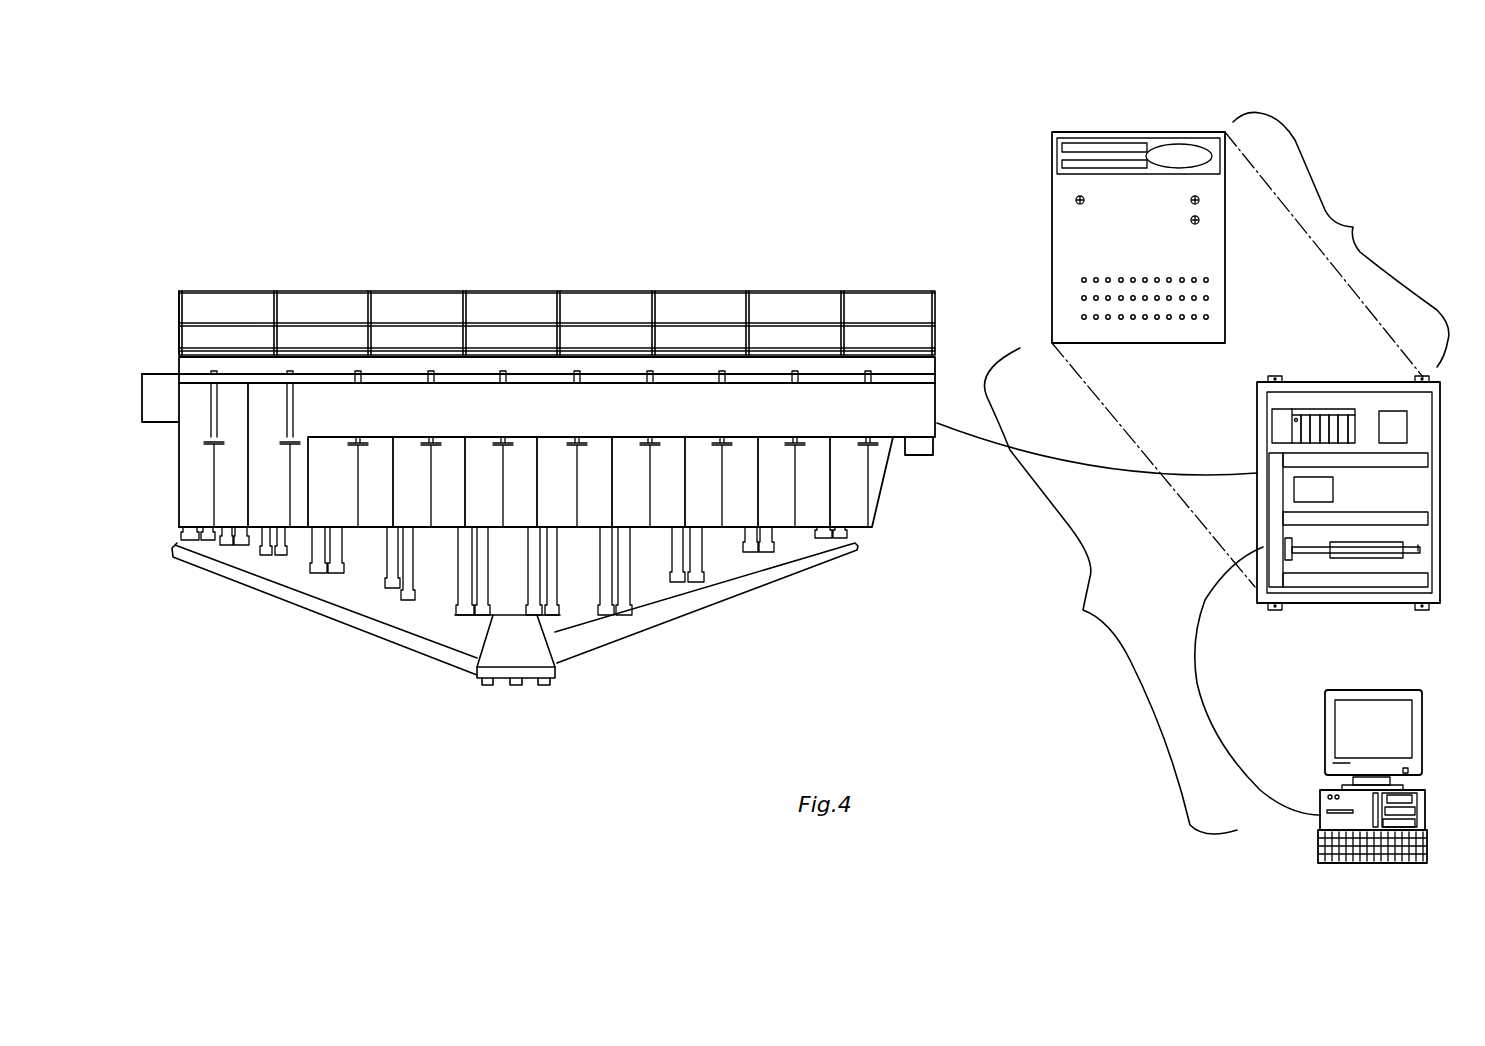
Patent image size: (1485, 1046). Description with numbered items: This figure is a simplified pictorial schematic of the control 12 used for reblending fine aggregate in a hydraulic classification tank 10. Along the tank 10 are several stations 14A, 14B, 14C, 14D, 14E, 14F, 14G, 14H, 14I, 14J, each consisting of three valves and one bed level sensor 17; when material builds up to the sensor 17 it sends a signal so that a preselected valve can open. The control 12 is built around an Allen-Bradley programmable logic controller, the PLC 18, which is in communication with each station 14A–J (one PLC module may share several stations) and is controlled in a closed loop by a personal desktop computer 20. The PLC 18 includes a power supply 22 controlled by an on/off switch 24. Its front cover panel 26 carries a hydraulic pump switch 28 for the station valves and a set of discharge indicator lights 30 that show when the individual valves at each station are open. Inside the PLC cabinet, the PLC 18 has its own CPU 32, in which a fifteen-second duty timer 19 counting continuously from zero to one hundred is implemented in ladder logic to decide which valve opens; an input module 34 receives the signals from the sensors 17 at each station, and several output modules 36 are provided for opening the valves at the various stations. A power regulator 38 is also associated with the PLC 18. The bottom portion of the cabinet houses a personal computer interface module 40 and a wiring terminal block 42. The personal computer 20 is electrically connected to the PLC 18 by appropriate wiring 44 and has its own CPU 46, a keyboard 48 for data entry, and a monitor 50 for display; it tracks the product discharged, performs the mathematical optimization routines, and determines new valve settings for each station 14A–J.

The hydraulic classification tank 10 is at (729, 256).
The control 12 is at (1110, 591).
The station 14A is at (200, 500).
The station 14B is at (290, 520).
The station 14C is at (357, 518).
The station 14D is at (433, 518).
The station 14E is at (527, 518).
The station 14F is at (540, 518).
The station 14G is at (598, 518).
The station 14H is at (678, 518).
The station 14I is at (752, 518).
The station 14J is at (837, 502).
The bed level sensor 17 is at (208, 442).
The programmable logic controller 18 is at (1193, 293).
The duty timer 19 is at (1294, 398).
The personal desktop computer 20 is at (1345, 760).
The power supply 22 is at (1280, 423).
The on/off switch 24 is at (1075, 199).
The front cover panel 26 is at (1153, 132).
The hydraulic pump switch 28 is at (1202, 218).
The discharge indicator lights 30 is at (1082, 317).
The CPU 32 is at (1298, 409).
The input module 34 is at (1307, 409).
The output modules 36 is at (1350, 409).
The power regulator 38 is at (1387, 443).
The personal computer interface module 40 is at (1300, 487).
The wiring terminal block 42 is at (1421, 548).
The wiring 44 is at (1198, 683).
The CPU 46 is at (1325, 790).
The keyboard 48 is at (1320, 847).
The monitor 50 is at (1355, 692).